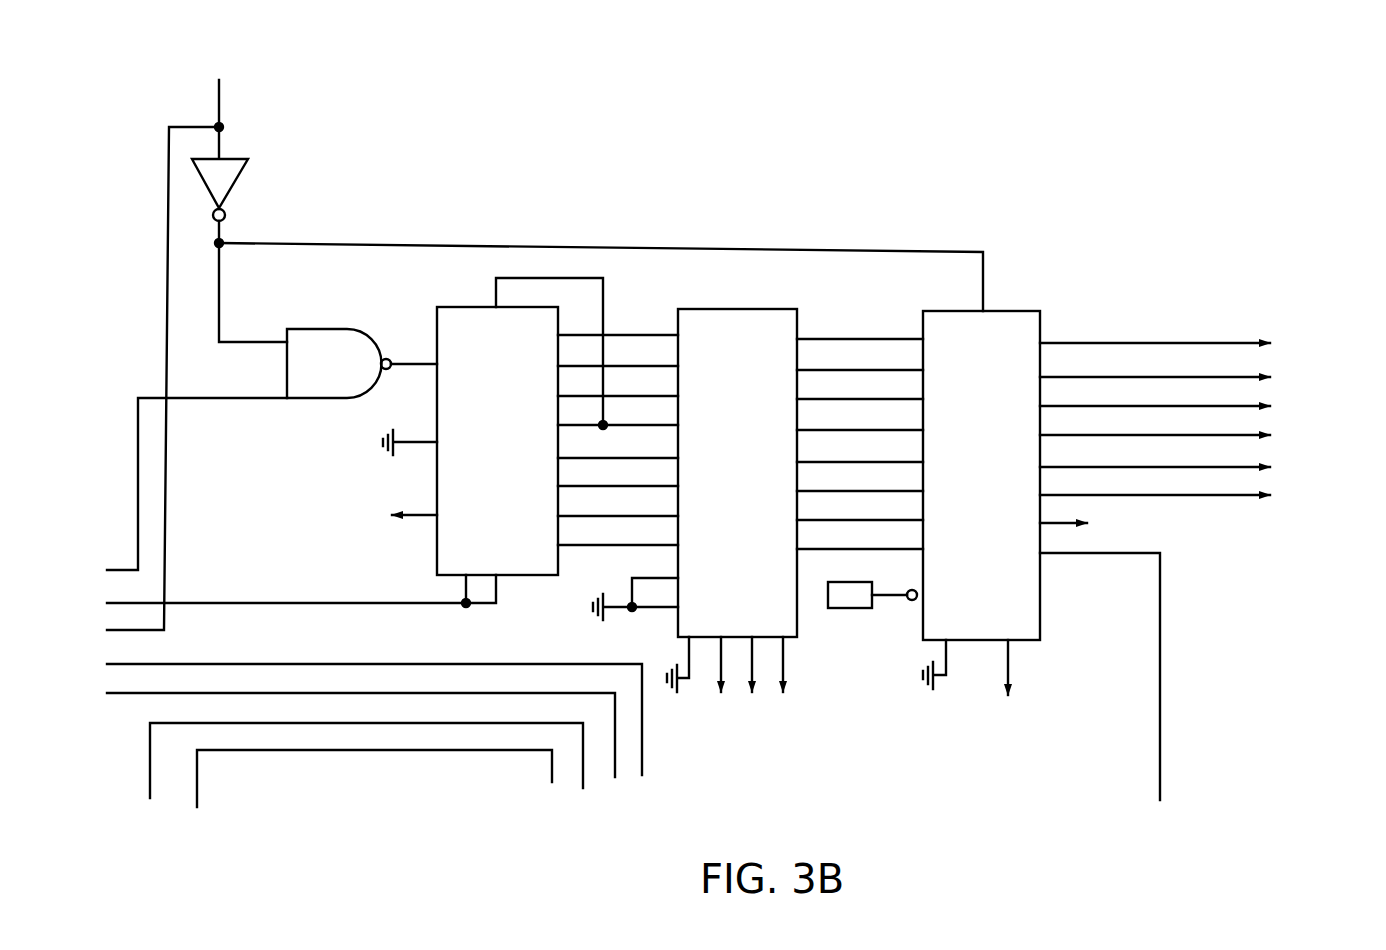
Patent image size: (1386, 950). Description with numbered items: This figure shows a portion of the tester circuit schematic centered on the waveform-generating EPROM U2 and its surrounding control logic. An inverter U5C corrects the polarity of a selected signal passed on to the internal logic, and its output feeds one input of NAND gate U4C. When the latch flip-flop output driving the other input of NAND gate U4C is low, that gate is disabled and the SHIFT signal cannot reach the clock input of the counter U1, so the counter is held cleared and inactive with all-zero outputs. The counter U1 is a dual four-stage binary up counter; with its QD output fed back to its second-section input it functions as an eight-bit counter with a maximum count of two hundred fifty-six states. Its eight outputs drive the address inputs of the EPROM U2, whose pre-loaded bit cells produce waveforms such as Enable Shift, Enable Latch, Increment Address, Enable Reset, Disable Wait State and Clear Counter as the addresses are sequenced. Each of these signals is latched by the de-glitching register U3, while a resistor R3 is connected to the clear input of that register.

The inverter U5C is at (545, 355).
The NAND gate U4C is at (272, 449).
The dual four-stage binary up counter integrated circuit U1 is at (392, 442).
The EPROM U2 is at (758, 540).
The de-glitching register U3 is at (1125, 555).
The resistor R3 10 kΩ R3 is at (872, 627).